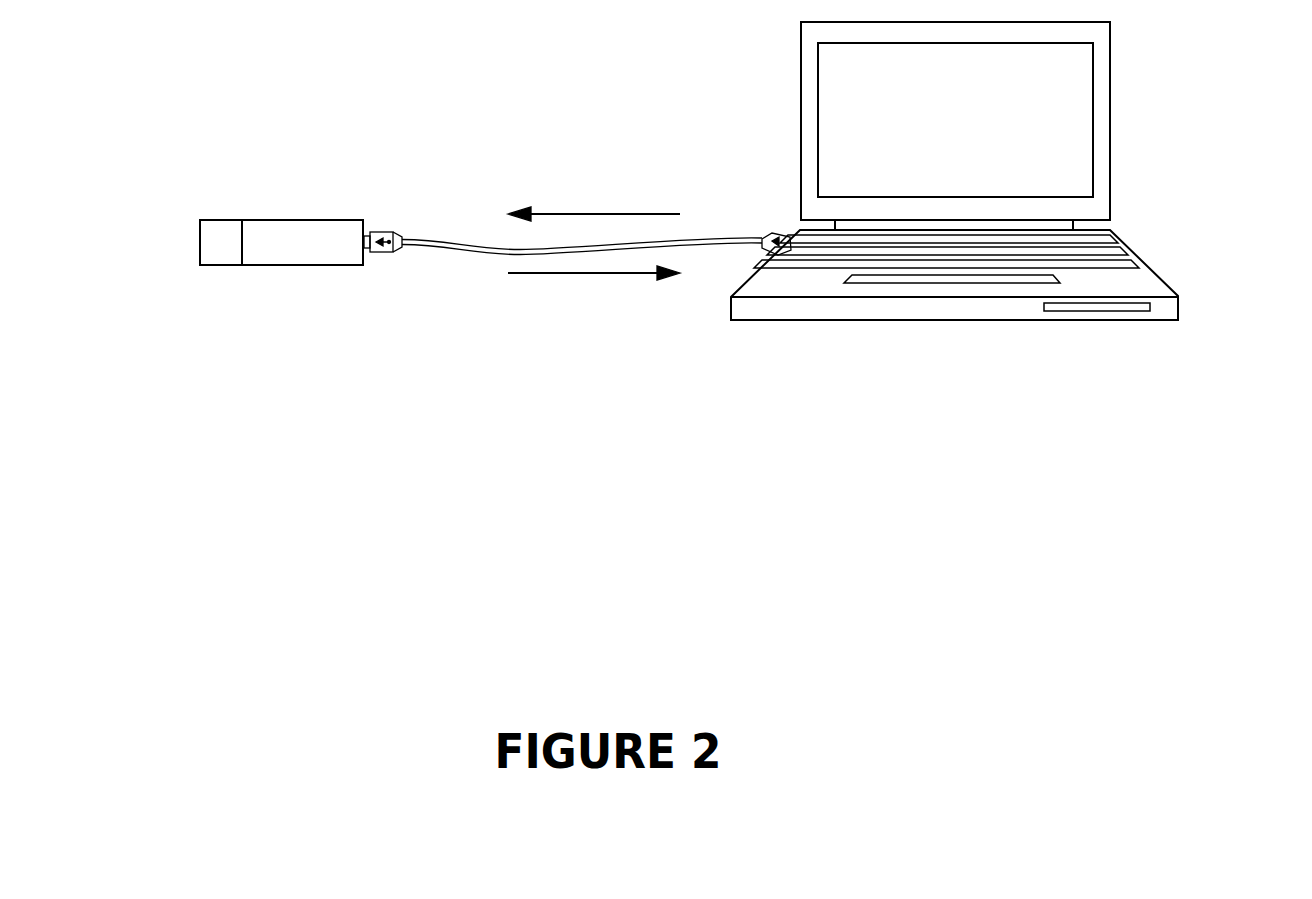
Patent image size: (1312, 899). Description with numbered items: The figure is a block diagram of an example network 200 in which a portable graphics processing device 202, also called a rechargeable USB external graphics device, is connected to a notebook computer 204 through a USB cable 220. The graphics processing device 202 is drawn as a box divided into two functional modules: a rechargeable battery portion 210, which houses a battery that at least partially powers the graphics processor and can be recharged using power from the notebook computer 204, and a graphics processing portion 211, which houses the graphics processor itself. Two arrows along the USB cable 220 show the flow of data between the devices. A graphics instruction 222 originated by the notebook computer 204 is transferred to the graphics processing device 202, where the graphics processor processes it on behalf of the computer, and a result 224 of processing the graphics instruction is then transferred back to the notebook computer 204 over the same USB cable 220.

The network 200 is at (1109, 482).
The graphics processing device 202 is at (365, 210).
The notebook computer 204 is at (1110, 130).
The rechargeable battery portion 210 is at (218, 266).
The graphics processing portion 211 is at (328, 266).
The USB cable 220 is at (479, 248).
The graphics instruction 222 is at (600, 212).
The result of processing graphics instruction 224 is at (583, 276).